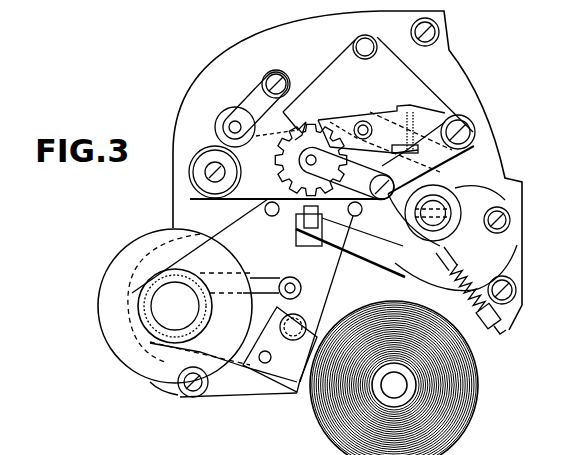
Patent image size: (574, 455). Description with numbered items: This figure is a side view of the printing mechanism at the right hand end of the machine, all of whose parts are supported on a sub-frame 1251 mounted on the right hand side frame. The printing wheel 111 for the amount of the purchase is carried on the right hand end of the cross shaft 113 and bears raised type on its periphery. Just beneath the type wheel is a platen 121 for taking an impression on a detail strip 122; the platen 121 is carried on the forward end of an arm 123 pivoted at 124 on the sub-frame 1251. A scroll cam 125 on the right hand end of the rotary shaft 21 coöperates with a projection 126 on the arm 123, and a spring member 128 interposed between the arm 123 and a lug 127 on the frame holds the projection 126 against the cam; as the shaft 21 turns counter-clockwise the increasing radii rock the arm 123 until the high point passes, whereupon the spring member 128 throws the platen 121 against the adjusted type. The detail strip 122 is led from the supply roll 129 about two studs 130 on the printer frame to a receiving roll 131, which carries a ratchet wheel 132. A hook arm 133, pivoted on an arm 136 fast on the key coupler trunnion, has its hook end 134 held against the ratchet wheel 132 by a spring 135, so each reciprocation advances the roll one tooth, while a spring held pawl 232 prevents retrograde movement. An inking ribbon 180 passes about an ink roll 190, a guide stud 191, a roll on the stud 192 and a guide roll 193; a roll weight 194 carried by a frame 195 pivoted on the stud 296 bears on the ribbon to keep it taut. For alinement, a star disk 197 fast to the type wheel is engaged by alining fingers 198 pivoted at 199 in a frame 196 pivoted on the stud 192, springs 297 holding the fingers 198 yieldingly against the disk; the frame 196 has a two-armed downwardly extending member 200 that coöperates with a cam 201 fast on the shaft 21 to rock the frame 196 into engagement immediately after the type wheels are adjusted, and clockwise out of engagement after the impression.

The sub-frame 1251 is at (453, 70).
The inking ribbon 180 is at (408, 60).
The guide roll 193 is at (360, 43).
The stud 296 is at (278, 76).
The frame 195 is at (253, 86).
The roll weight 194 is at (220, 118).
The star disk 197 is at (299, 131).
The cross shaft 113 is at (308, 162).
The printing wheel 111 is at (299, 135).
The guide stud 191 is at (384, 178).
The alining finger 198 is at (340, 122).
The pivot 199 is at (364, 124).
The frame 196 is at (416, 110).
The spring 297 is at (408, 128).
The stud 192 is at (470, 124).
The ink roll 190 is at (234, 150).
The two-armed downwardly extending member 200 is at (473, 168).
The scroll cam 125 is at (474, 178).
The rotary shaft 21 is at (441, 212).
The pivot 124 is at (503, 225).
The spring member 128 is at (486, 290).
The projection 126 is at (432, 250).
The lug 127 is at (510, 330).
The cam 201 is at (394, 264).
The arm 123 is at (388, 272).
The stud 130 is at (273, 217).
The platen 121 is at (306, 218).
The detail strip 122 is at (232, 226).
The receiving roll 131 is at (102, 317).
The ratchet wheel 132 is at (139, 293).
The hook end 134 is at (137, 345).
The spring held pawl 232 is at (251, 276).
The hook arm 133 is at (240, 363).
The arm 136 is at (277, 375).
The spring 135 is at (290, 381).
The supply roll 129 is at (466, 407).